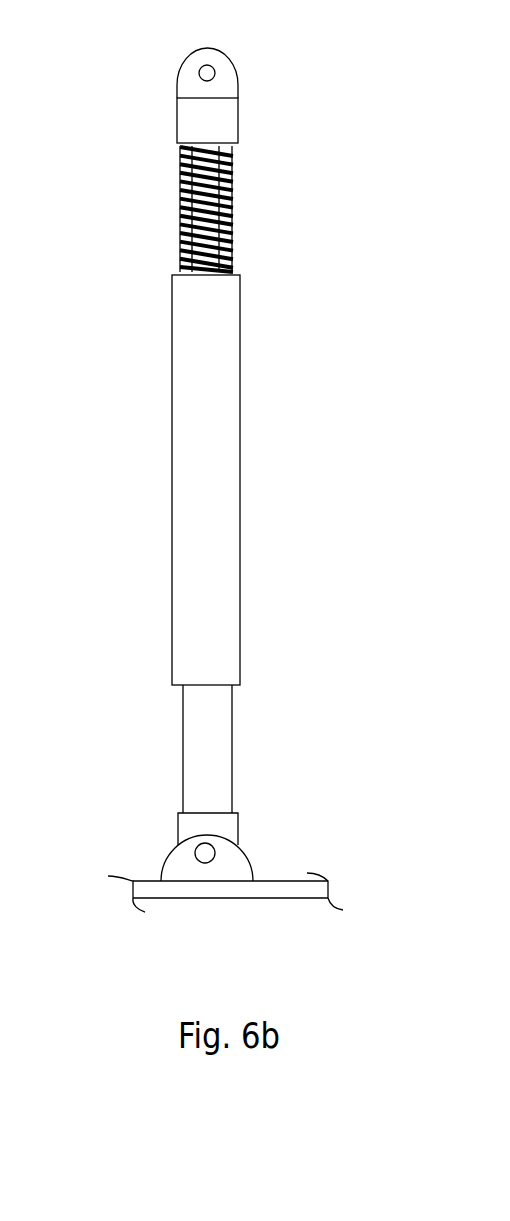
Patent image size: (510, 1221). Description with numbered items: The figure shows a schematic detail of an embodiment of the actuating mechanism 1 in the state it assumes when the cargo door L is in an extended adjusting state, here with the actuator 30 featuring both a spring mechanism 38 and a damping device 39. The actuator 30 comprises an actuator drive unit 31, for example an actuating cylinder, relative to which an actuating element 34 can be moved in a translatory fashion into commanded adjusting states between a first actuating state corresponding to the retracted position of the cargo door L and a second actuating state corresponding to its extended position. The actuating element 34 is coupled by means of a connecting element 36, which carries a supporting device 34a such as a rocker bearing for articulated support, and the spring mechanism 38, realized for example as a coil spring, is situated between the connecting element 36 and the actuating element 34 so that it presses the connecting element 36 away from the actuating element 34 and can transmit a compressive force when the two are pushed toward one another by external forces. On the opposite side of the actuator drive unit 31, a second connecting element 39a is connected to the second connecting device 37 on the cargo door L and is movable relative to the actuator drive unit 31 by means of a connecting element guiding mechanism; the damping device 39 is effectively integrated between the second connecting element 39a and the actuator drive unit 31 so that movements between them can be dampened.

The actuating mechanism 1 is at (334, 240).
The actuator 30 is at (136, 481).
The actuator drive unit 31 is at (232, 572).
The actuating element 34 is at (192, 209).
The supporting device 34a is at (198, 65).
The connecting element 36 is at (187, 117).
The second connecting device 37 is at (193, 853).
The spring mechanism 38 is at (232, 202).
The damping device 39 is at (250, 697).
The second connecting element 39a is at (232, 732).
The cargo door L is at (265, 895).